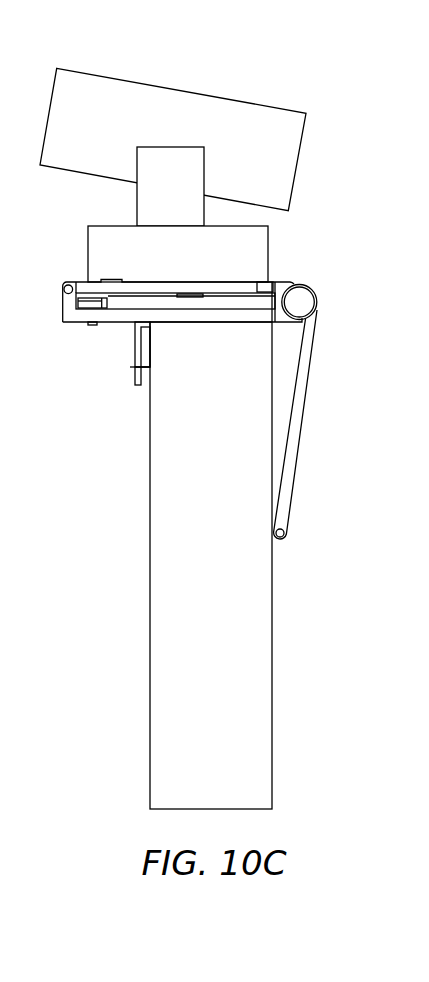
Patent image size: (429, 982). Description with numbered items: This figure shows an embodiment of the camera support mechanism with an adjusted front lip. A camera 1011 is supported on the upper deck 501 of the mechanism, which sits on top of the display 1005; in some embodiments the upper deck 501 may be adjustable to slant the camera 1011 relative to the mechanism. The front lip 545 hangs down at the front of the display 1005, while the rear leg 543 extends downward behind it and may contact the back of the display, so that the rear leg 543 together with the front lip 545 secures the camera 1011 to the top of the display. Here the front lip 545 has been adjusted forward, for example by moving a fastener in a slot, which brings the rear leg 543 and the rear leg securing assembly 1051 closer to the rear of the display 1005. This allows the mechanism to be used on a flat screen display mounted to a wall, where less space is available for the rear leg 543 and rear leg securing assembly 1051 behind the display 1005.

The camera 1011 is at (114, 85).
The upper deck 501 is at (78, 282).
The front lip 545 is at (135, 357).
The rear leg securing assembly 1051 is at (312, 302).
The rear leg 543 is at (303, 385).
The display 1005 is at (158, 613).